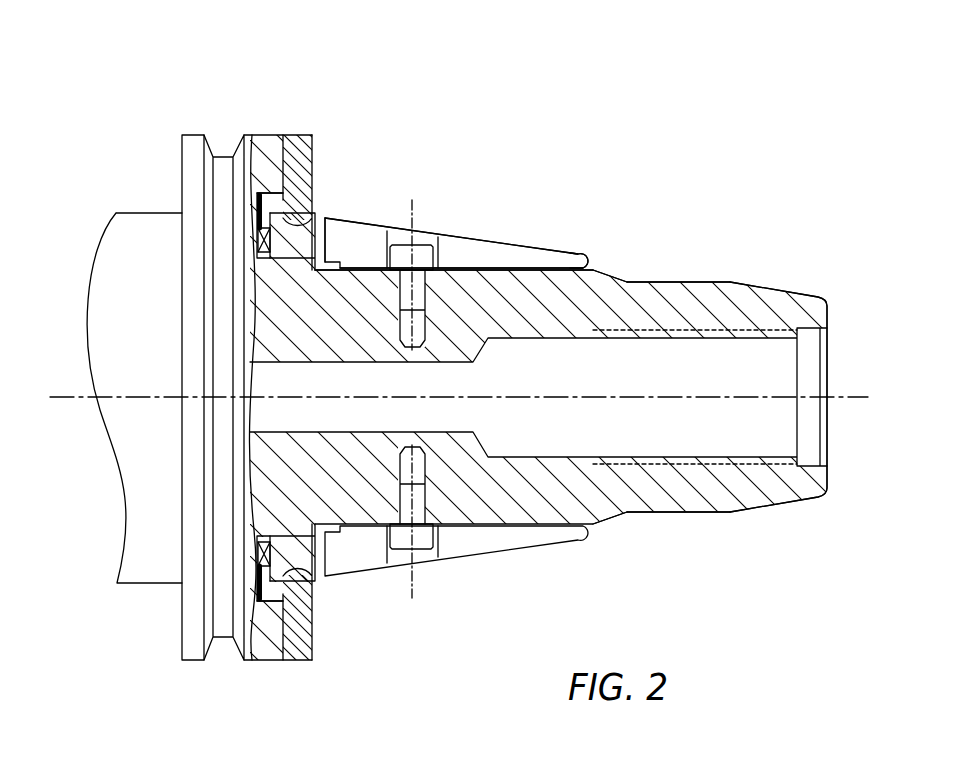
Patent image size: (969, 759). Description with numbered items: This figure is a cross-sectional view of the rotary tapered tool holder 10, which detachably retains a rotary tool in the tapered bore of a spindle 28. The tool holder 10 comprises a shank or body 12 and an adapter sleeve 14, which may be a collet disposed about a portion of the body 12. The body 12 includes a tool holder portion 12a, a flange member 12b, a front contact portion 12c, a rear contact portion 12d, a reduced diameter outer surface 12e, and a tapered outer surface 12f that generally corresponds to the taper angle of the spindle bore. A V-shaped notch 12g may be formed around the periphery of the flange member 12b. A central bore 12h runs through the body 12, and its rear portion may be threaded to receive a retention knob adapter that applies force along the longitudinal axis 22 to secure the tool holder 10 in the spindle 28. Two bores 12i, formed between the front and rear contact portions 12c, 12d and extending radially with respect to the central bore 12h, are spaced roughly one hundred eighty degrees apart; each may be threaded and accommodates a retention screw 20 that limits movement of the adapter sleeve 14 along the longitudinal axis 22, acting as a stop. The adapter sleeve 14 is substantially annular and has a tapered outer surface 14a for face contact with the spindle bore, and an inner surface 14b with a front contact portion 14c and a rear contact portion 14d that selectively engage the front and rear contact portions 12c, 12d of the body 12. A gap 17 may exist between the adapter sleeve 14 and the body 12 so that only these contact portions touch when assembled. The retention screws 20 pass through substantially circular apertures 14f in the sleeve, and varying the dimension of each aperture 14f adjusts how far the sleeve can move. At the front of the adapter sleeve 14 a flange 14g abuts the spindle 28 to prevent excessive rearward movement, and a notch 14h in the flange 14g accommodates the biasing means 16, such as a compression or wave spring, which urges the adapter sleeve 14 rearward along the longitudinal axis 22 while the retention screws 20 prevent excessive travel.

The rotary tapered tool holder 10 is at (690, 105).
The body 12 is at (722, 262).
The tool holder portion 12a is at (130, 213).
The flange member 12b is at (193, 135).
The front contact portion 12c is at (300, 215).
The rear contact portion 12d is at (577, 270).
The reduced diameter outer surface 12e is at (655, 282).
The tapered outer surface 12f is at (800, 296).
The V-shaped notch 12g is at (225, 158).
The central bore 12h is at (780, 355).
The bore 12i is at (430, 488).
The adapter sleeve 14 is at (495, 203).
The tapered outer surface 14a is at (493, 243).
The inner surface 14b is at (503, 265).
The front contact portion 14c is at (312, 262).
The rear contact portion 14d is at (565, 265).
The aperture 14f is at (393, 235).
The flange 14g is at (272, 205).
The notch 14h is at (308, 225).
The biasing means 16 is at (257, 245).
The gap 17 is at (470, 267).
The retention screw 20 is at (415, 248).
The longitudinal axis 22 is at (843, 397).
The spindle 28 is at (312, 162).